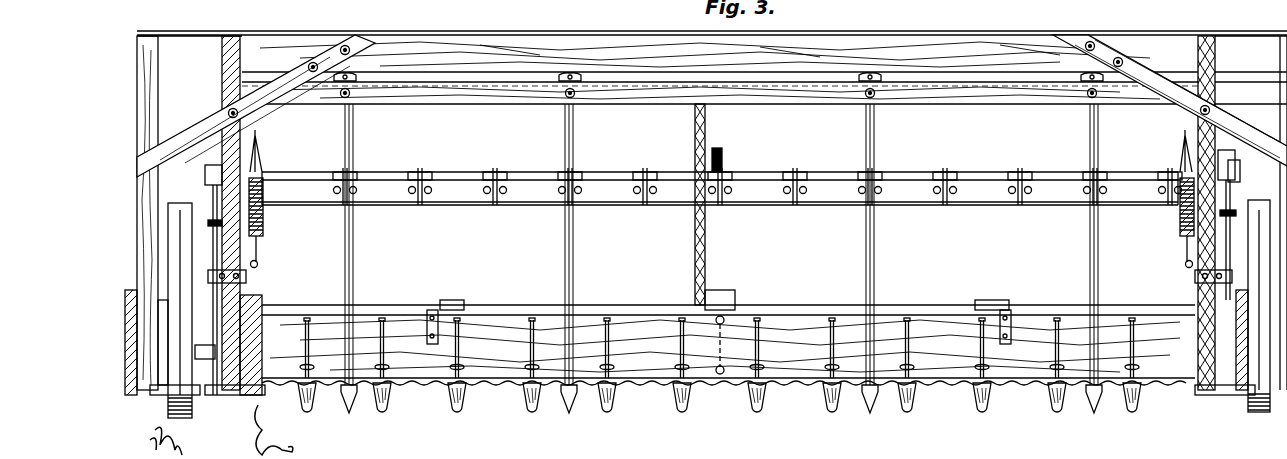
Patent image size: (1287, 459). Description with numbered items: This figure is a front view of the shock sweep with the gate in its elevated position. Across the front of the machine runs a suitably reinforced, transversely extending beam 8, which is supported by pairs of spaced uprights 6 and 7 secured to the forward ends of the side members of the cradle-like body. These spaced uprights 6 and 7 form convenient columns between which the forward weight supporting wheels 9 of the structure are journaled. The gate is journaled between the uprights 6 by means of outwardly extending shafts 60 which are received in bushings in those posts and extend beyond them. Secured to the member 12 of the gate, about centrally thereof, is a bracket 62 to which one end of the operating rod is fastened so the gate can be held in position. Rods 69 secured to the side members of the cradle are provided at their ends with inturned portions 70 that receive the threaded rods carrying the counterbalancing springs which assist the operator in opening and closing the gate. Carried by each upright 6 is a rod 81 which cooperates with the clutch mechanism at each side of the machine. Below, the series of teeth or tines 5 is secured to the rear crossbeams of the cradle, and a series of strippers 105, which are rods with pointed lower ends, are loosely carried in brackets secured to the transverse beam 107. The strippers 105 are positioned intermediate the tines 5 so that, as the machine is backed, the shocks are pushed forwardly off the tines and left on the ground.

The teeth or tines 5 is at (520, 389).
The uprights 6 is at (243, 133).
The uprights 7 is at (158, 91).
The transversely extending beam 8 is at (921, 55).
The forward weight supporting wheels 9 is at (178, 417).
The gate member 12 is at (768, 180).
The outwardly extending shafts 60 is at (263, 210).
The bracket 62 is at (722, 155).
The rods 69 is at (247, 279).
The inturned portions 70 is at (258, 265).
The rod 81 is at (1222, 207).
The strippers 105 is at (573, 248).
The transverse beam 107 is at (631, 100).